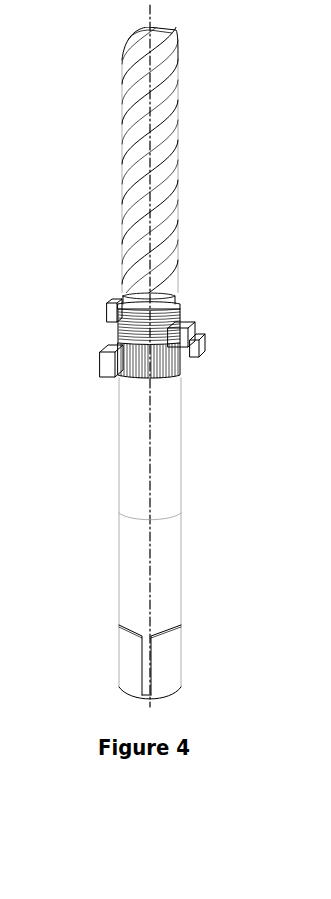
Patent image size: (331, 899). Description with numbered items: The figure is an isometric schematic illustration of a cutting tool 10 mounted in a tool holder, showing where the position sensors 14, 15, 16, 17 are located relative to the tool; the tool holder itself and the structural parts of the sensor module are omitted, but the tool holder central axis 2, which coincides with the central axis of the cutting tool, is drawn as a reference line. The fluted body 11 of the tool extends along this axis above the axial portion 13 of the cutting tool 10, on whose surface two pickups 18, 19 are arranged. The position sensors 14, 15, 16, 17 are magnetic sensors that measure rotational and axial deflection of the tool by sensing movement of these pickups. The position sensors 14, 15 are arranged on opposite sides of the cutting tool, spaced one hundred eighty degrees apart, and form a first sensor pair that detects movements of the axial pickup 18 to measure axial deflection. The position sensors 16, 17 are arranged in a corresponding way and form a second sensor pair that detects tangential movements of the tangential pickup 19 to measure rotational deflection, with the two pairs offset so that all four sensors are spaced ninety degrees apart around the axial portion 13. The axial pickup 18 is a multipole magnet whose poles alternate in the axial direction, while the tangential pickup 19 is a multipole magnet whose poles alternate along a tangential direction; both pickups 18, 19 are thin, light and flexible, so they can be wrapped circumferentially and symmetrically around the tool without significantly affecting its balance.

The tool holder central axis 2 is at (150, 5).
The cutting tool 10 is at (98, 196).
The drill body with flutes 11 is at (170, 85).
The axial portion 13 is at (108, 338).
The position sensor 14 is at (110, 302).
The position sensor 15 is at (185, 330).
The position sensor 16 is at (99, 367).
The position sensor 17 is at (200, 352).
The axial pickup 18 is at (170, 312).
The tangential pickup 19 is at (165, 365).